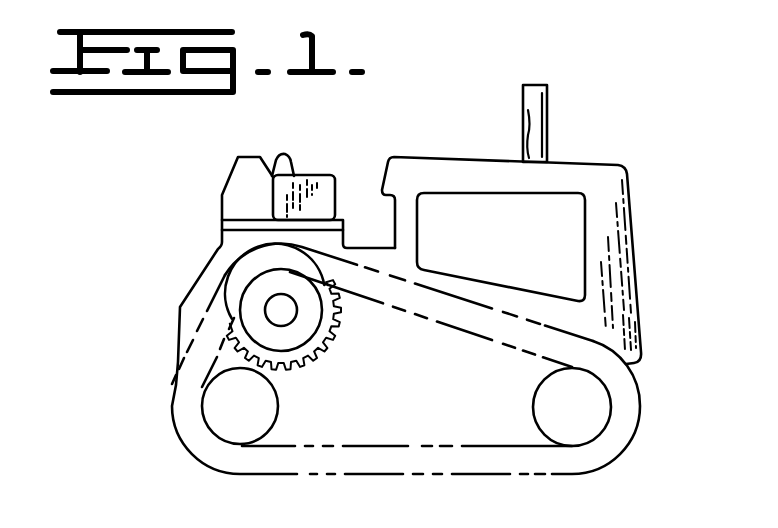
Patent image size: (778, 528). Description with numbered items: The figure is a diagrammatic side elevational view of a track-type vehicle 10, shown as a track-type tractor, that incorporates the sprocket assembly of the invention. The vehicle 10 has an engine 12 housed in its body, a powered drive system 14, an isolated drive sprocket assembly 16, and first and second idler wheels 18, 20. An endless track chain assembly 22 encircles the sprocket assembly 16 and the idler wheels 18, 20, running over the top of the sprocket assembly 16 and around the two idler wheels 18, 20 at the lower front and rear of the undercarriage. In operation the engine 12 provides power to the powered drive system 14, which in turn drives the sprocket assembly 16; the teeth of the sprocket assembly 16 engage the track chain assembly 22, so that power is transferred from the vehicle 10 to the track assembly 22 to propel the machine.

The vehicle 10 is at (597, 166).
The engine 12 is at (500, 246).
The powered drive system 14 is at (263, 305).
The isolated drive sprocket assembly 16 is at (340, 345).
The first idler wheel 18 is at (533, 404).
The second idler wheel 20 is at (279, 421).
The endless track chain assembly 22 is at (377, 446).